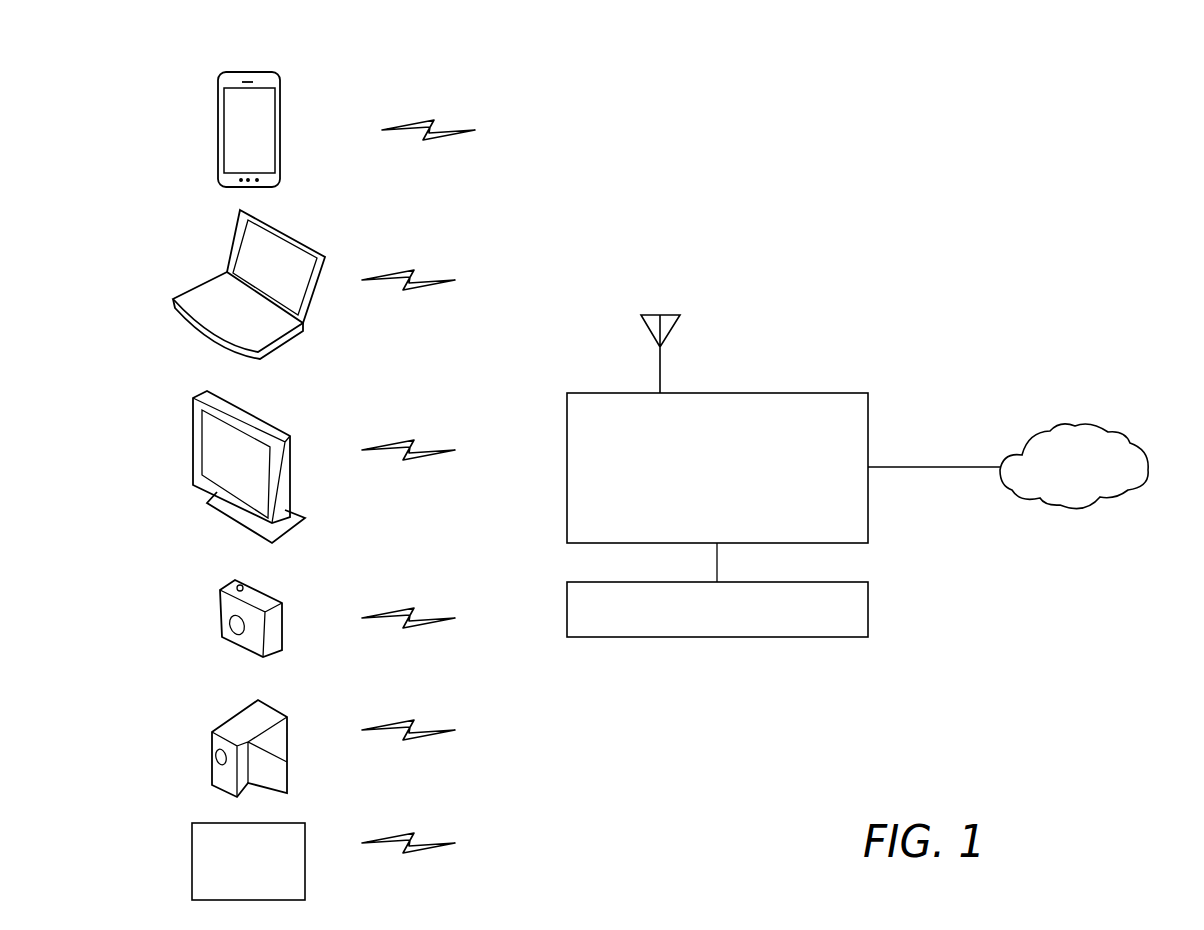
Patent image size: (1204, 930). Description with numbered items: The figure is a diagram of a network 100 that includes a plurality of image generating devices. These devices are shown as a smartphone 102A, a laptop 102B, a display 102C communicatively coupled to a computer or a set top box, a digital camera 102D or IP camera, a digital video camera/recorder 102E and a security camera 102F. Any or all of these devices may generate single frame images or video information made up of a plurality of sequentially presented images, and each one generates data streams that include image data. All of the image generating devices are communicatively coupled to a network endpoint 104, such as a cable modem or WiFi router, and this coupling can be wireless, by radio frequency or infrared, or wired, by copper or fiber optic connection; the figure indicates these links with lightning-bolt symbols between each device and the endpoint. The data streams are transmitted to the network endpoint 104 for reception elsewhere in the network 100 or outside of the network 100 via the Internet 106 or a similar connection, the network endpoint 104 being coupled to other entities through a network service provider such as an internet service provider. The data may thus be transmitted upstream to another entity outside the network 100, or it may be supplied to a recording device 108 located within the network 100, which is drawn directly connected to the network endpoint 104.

The network 100 is at (735, 82).
The smartphone 102A is at (278, 112).
The laptop 102B is at (325, 260).
The display 102C is at (290, 450).
The digital camera 102D is at (282, 600).
The digital video camera/recorder 102E is at (288, 730).
The security camera 102F is at (305, 845).
The network endpoint 104 is at (717, 393).
The Internet 106 is at (1073, 428).
The recording device 108 is at (868, 600).